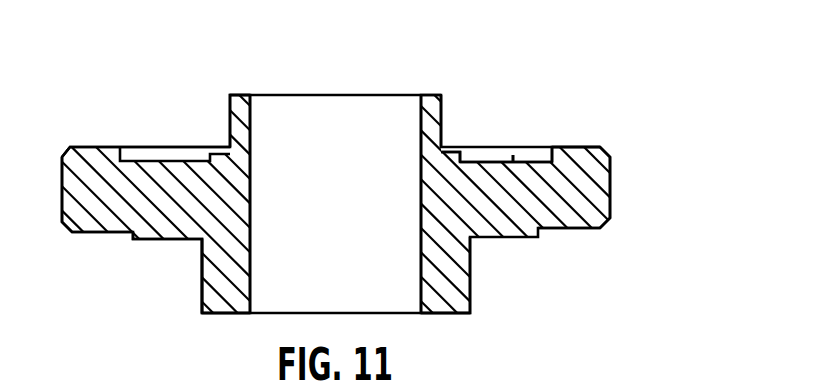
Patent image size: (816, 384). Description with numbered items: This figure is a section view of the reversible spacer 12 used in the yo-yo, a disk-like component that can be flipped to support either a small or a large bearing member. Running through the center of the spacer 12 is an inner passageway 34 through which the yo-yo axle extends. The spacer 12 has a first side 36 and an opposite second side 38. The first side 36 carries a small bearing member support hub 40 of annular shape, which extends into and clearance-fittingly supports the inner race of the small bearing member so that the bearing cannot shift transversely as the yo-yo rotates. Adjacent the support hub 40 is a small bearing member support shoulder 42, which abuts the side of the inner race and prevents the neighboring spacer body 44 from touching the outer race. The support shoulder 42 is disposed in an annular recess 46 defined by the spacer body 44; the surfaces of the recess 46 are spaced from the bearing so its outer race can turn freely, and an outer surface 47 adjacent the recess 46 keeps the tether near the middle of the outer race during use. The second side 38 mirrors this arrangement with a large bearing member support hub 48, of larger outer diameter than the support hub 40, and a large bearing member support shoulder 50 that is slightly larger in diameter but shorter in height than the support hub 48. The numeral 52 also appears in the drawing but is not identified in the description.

The reversible spacer 12 is at (520, 70).
The inner passageway 34 is at (363, 108).
The first side 36 is at (190, 116).
The second side 38 is at (164, 274).
The small bearing member support hub 40 is at (230, 137).
The small bearing member support shoulder 42 is at (450, 152).
The spacer body 44 is at (611, 190).
The annular recess 46 is at (513, 161).
The outer surface 47 is at (583, 147).
The large bearing member support hub 48 is at (200, 305).
The large bearing member support shoulder 50 is at (515, 238).
The opening 52 is at (619, 371).